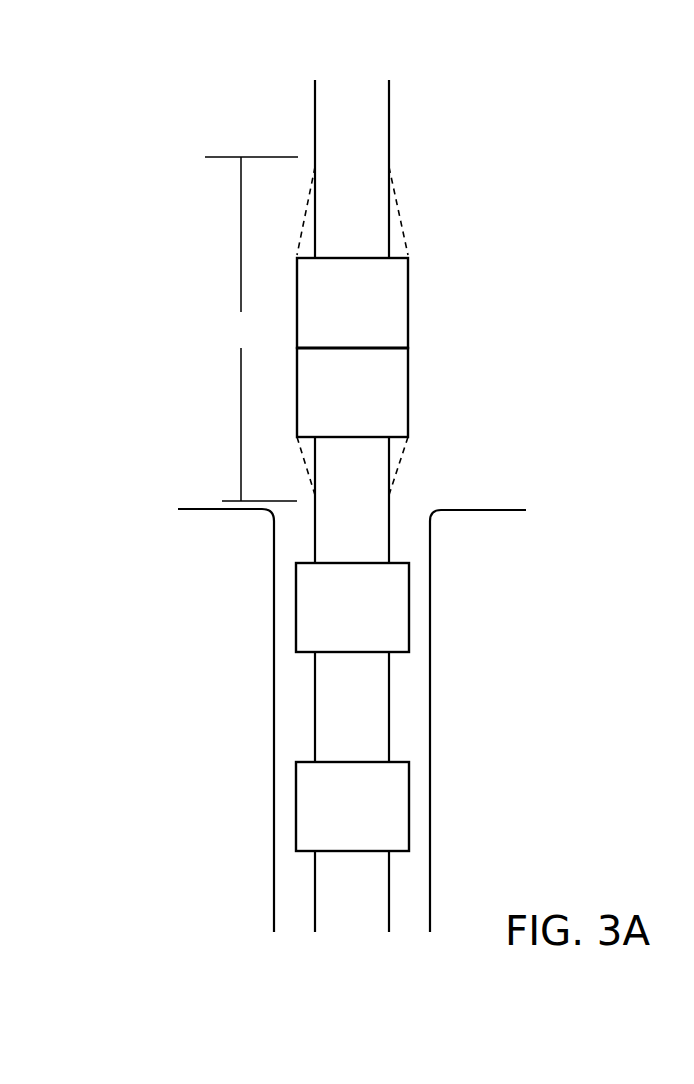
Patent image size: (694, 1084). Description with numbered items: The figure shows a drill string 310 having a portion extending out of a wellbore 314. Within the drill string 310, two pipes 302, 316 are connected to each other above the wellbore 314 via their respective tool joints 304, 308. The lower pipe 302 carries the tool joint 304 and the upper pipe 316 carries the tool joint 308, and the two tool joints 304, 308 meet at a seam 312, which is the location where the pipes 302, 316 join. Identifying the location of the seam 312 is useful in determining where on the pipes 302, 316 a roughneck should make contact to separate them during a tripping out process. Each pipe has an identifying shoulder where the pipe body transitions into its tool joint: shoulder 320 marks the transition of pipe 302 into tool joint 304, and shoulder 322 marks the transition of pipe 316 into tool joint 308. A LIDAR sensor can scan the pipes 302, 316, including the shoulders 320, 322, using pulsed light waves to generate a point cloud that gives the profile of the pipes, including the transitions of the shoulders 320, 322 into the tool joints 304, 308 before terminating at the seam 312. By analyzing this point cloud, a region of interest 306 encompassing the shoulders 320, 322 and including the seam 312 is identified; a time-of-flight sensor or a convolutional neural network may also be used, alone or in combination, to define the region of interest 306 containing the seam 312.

The pipe 302 is at (389, 525).
The tool joint 304 is at (408, 398).
The region of interest 306 is at (251, 329).
The tool joint 308 is at (408, 302).
The drill string 310 is at (389, 723).
The seam 312 is at (380, 348).
The wellbore 314 is at (430, 638).
The pipe 316 is at (389, 125).
The shoulder 320 is at (402, 457).
The shoulder 322 is at (400, 230).